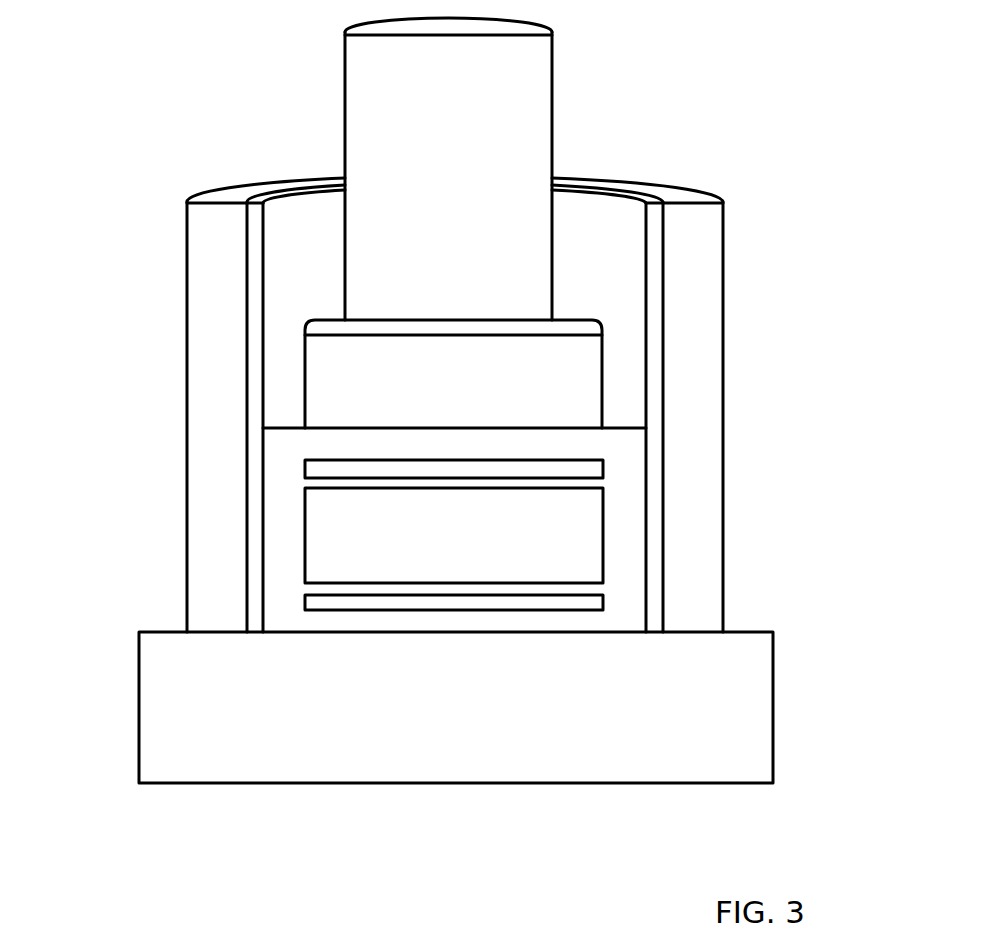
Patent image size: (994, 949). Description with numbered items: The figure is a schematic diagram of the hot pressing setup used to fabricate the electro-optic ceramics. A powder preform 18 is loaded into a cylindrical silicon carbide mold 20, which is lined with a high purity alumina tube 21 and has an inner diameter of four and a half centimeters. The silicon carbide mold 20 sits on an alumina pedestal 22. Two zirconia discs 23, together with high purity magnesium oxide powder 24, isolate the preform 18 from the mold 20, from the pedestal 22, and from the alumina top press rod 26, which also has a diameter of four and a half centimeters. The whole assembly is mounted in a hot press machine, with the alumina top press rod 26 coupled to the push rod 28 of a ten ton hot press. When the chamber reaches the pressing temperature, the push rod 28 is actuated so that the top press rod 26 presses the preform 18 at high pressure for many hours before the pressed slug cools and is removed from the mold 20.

The powder preform 18 is at (580, 530).
The cylindrical silicon carbide mold 20 is at (688, 403).
The high purity alumina tube 21 is at (655, 322).
The alumina pedestal 22 is at (148, 708).
The zirconia discs 23 is at (307, 467).
The high purity magnesium oxide powder 24 is at (627, 602).
The alumina top press rod 26 is at (313, 370).
The push rod 28 is at (505, 88).